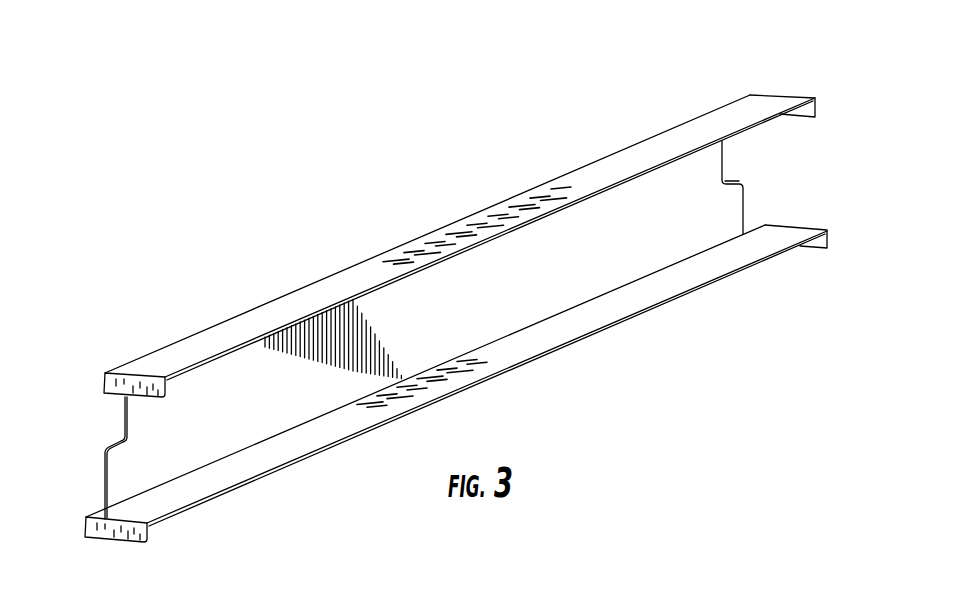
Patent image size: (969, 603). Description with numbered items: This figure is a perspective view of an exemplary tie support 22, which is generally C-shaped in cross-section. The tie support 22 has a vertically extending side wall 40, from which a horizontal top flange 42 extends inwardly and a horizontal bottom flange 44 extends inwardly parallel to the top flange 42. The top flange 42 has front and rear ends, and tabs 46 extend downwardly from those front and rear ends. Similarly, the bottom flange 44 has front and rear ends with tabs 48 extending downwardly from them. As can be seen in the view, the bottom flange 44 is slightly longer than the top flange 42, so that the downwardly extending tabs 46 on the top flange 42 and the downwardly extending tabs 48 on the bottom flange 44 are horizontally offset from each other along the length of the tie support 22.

The tie support 22 is at (434, 290).
The side wall 40 is at (620, 265).
The top flange 42 is at (548, 198).
The bottom flange 44 is at (563, 328).
The tabs 46 is at (106, 383).
The tabs 48 is at (88, 530).